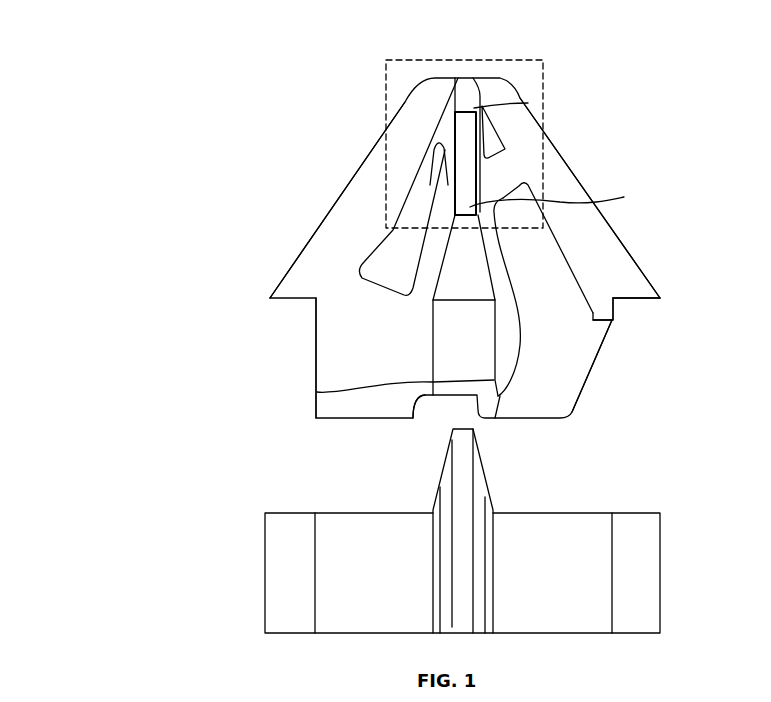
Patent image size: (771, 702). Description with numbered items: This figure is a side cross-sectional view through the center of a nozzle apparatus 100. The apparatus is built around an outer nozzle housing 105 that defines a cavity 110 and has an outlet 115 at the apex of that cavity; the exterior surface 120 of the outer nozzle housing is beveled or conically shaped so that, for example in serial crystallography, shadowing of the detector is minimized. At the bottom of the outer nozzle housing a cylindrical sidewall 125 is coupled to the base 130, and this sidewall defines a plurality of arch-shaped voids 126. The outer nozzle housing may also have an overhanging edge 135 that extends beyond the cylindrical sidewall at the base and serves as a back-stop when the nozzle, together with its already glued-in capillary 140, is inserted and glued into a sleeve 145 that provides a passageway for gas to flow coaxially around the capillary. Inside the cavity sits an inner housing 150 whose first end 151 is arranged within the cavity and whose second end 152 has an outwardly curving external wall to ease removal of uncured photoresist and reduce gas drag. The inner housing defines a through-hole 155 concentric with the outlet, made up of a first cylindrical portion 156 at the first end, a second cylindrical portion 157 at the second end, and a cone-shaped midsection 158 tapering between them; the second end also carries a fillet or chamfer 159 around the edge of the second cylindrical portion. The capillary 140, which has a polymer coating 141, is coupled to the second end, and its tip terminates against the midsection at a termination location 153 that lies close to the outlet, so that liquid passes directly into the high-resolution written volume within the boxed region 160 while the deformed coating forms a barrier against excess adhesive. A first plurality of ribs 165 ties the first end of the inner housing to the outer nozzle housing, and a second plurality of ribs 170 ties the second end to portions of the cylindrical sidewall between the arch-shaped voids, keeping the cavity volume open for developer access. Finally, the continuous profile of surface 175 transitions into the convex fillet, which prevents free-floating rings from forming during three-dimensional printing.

The nozzle apparatus 100 is at (304, 54).
The outer nozzle housing 105 is at (350, 200).
The cavity 110 is at (393, 253).
The outlet 115 is at (465, 77).
The exterior surface 120 is at (397, 137).
The cylindrical sidewall 125 is at (327, 337).
The arch-shaped voids 126 is at (588, 363).
The base 130 is at (620, 303).
The overhanging edge 135 is at (640, 300).
The capillary 140 is at (463, 447).
The polymer coating 141 is at (437, 620).
The sleeve 145 is at (282, 545).
The inner housing 150 is at (500, 243).
The first end 151 is at (530, 103).
The second end 152 is at (403, 325).
The termination location 153 is at (565, 198).
The through-hole 155 is at (560, 138).
The first cylindrical portion 156 is at (470, 170).
The second cylindrical portion 157 is at (467, 338).
The midsection 158 is at (470, 262).
The chamfer 159 is at (317, 392).
The boxed region 160 is at (407, 60).
The first plurality of ribs 165 is at (425, 165).
The second plurality of ribs 170 is at (370, 360).
The surface 175 is at (405, 410).